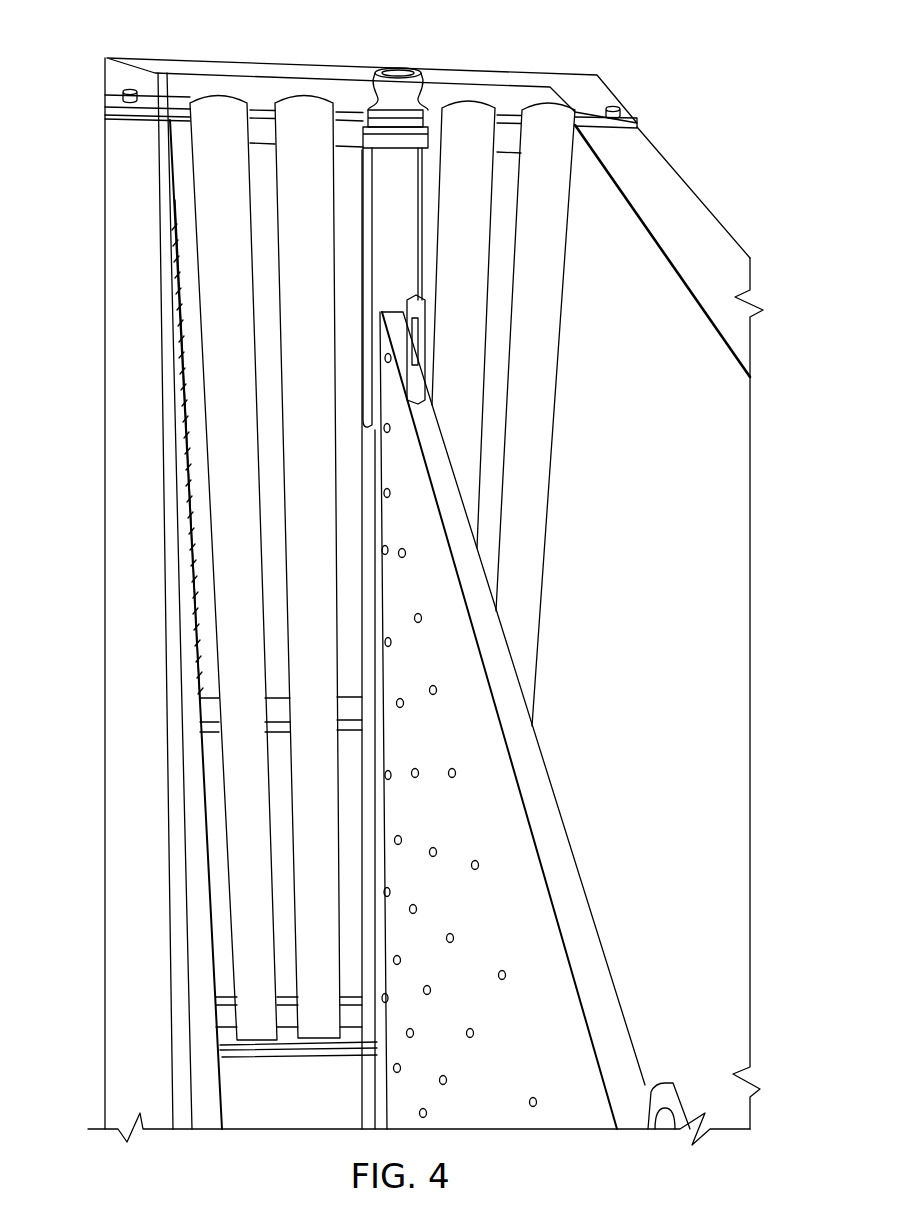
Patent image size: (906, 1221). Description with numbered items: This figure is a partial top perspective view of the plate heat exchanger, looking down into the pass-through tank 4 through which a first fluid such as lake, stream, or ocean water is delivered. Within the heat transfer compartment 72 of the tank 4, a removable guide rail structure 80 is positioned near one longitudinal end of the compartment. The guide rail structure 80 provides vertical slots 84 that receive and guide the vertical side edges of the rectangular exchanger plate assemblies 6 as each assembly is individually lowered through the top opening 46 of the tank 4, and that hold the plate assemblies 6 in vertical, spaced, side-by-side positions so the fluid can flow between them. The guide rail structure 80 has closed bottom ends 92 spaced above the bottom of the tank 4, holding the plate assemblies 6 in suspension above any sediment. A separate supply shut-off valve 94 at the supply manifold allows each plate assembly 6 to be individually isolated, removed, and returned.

The pass-through tank 4 is at (130, 485).
The exchanger plate assembly 6 is at (530, 781).
The top opening 46 is at (205, 655).
The heat transfer compartment 72 is at (660, 272).
The guide rail structure 80 is at (297, 106).
The vertical slots 84 is at (232, 106).
The closed bottom ends 92 is at (320, 1030).
The supply shut-off valve 94 is at (399, 73).